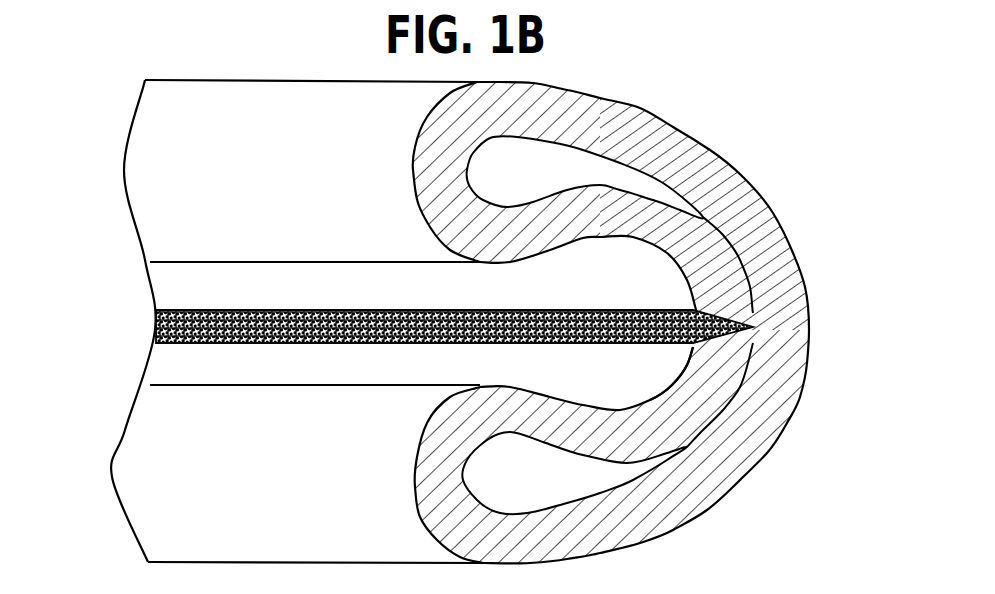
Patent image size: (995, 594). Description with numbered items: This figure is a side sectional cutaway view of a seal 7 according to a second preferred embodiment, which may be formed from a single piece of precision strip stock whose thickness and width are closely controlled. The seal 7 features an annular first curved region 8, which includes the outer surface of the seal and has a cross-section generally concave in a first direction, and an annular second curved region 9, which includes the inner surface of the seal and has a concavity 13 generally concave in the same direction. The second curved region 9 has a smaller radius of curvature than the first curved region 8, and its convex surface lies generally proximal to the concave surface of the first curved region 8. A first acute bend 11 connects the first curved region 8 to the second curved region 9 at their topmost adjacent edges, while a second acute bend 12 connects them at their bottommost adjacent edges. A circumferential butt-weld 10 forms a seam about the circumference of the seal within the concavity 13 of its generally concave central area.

The seal 7 is at (747, 136).
The first curved region 8 is at (787, 250).
The second curved region 9 is at (667, 390).
The circumferential butt-weld 10 is at (155, 328).
The first acute bend 11 is at (412, 178).
The second acute bend 12 is at (418, 452).
The concavity 13 is at (623, 298).